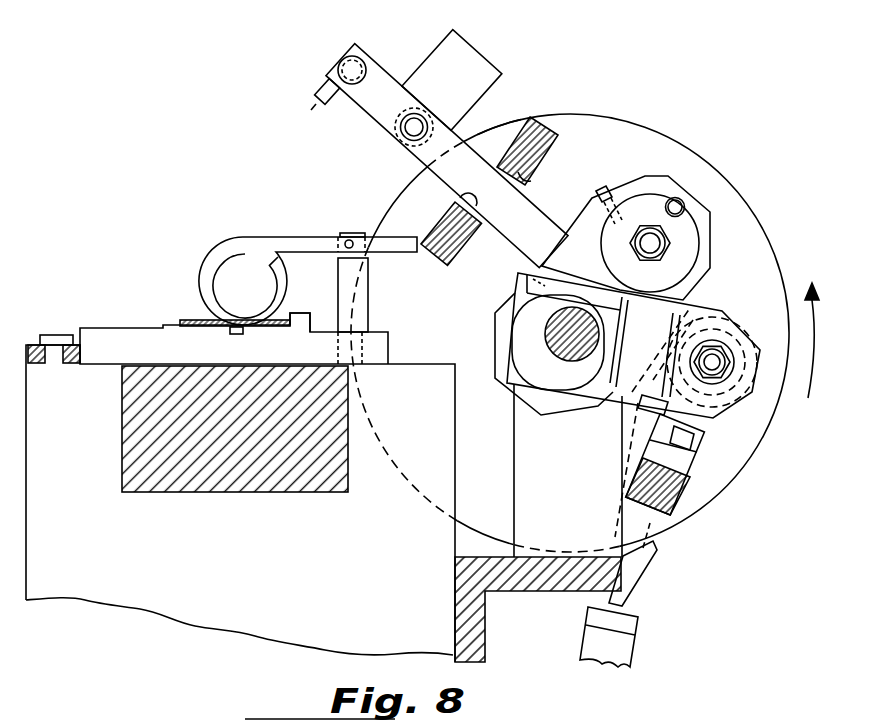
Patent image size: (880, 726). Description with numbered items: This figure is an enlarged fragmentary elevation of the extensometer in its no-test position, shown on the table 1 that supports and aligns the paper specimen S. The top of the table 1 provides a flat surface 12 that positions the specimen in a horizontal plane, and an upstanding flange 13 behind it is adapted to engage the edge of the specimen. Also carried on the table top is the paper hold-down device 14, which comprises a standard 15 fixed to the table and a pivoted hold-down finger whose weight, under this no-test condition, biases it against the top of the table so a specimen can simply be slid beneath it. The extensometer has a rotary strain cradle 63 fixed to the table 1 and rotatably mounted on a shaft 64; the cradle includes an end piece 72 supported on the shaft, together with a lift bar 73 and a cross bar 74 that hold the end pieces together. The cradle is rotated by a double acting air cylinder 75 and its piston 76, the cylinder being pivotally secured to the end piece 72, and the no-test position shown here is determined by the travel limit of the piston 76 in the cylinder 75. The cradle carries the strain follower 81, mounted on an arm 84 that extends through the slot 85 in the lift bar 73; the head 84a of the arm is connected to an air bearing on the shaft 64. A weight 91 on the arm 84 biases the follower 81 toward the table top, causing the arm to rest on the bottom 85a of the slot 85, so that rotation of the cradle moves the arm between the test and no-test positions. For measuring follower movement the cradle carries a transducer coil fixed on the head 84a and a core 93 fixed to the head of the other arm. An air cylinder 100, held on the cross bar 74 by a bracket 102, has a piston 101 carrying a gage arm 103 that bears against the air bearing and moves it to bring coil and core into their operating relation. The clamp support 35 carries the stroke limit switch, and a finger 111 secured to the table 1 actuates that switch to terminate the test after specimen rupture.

The table 1 is at (214, 584).
The flat surface 12 is at (174, 320).
The workpiece strip S is at (193, 320).
The upstanding flange 13 is at (312, 323).
The paper hold-down device 14 is at (343, 290).
The standard 15 is at (232, 244).
The clamp support 35 is at (262, 470).
The rotary strain cradle 63 is at (474, 632).
The shaft 64 is at (553, 322).
The end piece 72 is at (642, 138).
The lift bar 73 is at (525, 130).
The cross bar 74 is at (690, 483).
The double acting air cylinder 75 is at (618, 650).
The piston 76 is at (633, 572).
The strain follower 81 is at (316, 106).
The arm 84 is at (452, 126).
The head 84a is at (660, 177).
The slot 85 is at (523, 178).
The bottom of the slot 85a is at (458, 189).
The weight 91 is at (470, 63).
The core 93 is at (656, 243).
The air cylinder 100 is at (753, 395).
The piston 101 is at (713, 362).
The bracket 102 is at (703, 430).
The gage arm 103 is at (684, 308).
The finger 111 is at (28, 343).